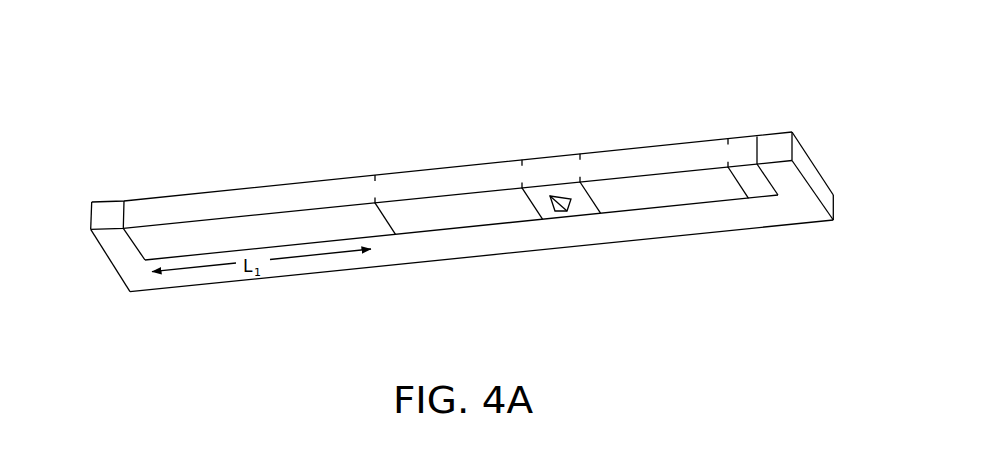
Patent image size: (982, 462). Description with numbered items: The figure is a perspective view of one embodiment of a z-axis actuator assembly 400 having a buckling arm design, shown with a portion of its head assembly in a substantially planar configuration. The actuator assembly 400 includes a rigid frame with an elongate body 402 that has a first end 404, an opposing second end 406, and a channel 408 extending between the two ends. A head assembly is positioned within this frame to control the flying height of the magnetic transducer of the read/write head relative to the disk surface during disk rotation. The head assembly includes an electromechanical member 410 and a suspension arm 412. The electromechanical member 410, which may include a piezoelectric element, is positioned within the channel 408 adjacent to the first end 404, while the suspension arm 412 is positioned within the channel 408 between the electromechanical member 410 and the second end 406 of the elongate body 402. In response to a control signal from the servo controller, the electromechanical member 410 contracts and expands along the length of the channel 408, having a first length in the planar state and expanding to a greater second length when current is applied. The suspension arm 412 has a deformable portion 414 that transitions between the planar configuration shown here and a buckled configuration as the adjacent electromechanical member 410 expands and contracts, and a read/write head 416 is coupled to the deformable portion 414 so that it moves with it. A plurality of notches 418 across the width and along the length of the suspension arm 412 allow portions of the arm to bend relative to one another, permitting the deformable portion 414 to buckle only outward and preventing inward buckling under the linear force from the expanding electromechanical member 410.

The z-axis actuator assembly 400 is at (176, 76).
The elongate body 402 is at (409, 264).
The first end 404 is at (105, 242).
The second end 406 is at (793, 180).
The channel 408 is at (290, 247).
The electromechanical member 410 is at (208, 203).
The suspension arm 412 is at (450, 153).
The deformable portion 414 is at (552, 173).
The read/write head 416 is at (566, 208).
The notches 418 is at (370, 192).